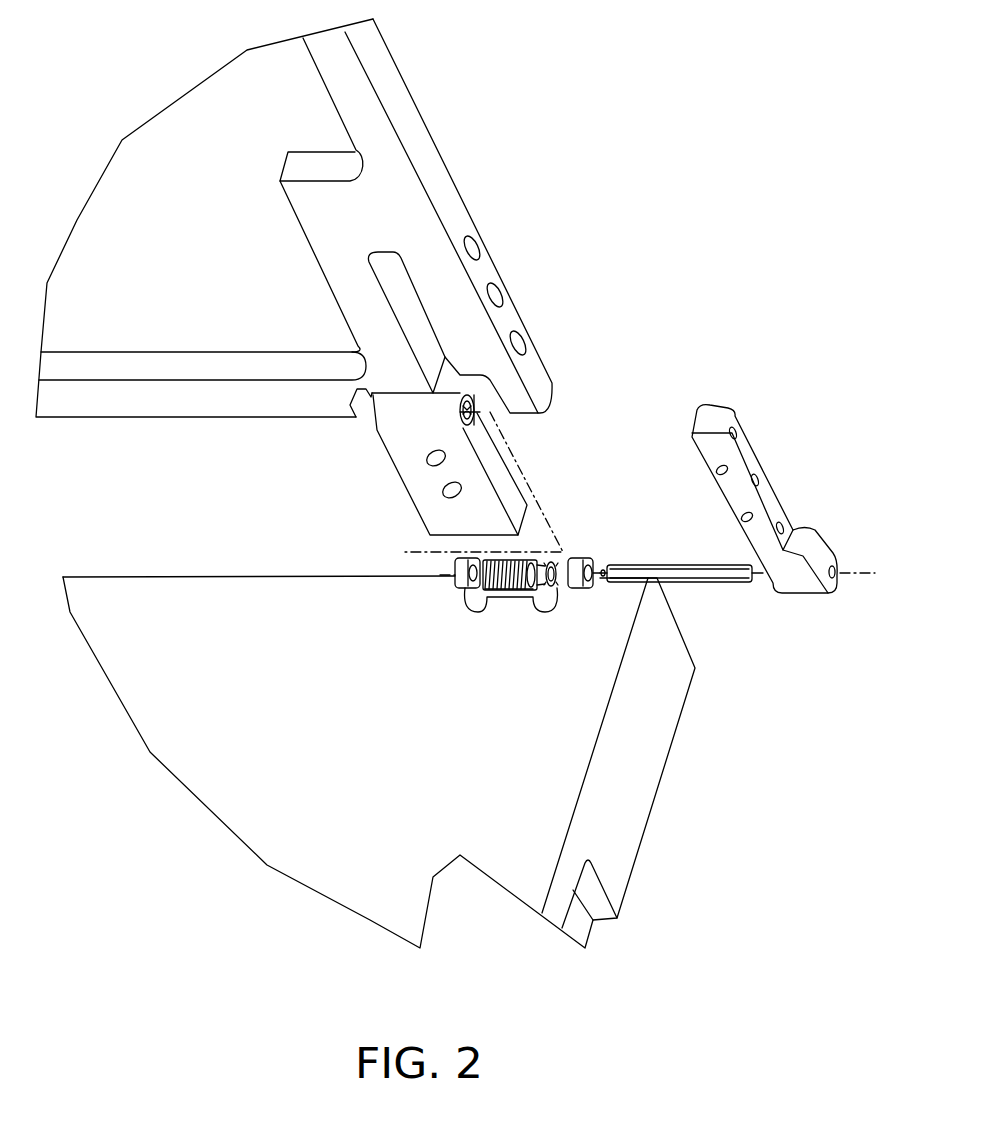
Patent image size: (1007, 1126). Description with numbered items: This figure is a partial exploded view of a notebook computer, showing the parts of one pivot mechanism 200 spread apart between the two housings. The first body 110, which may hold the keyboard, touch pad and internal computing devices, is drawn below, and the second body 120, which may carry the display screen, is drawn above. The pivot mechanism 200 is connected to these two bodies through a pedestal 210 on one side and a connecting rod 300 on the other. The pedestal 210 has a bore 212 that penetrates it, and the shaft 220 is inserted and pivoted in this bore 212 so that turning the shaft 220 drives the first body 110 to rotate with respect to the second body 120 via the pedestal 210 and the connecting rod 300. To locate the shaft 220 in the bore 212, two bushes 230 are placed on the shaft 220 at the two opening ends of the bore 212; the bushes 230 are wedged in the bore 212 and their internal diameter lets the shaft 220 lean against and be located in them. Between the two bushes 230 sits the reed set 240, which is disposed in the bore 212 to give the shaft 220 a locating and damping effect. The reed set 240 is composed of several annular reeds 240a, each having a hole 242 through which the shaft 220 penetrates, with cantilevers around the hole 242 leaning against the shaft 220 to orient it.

The first body 110 is at (642, 788).
The second body 120 is at (390, 72).
The pivot mechanism 200 is at (643, 438).
The pedestal 210 is at (508, 480).
The bore 212 is at (478, 414).
The shaft 220 is at (680, 567).
The bush 230 is at (455, 580).
The reed set 240 is at (507, 610).
The annular reed 240a is at (568, 557).
The hole 242 is at (556, 592).
The connecting rod 300 is at (747, 452).